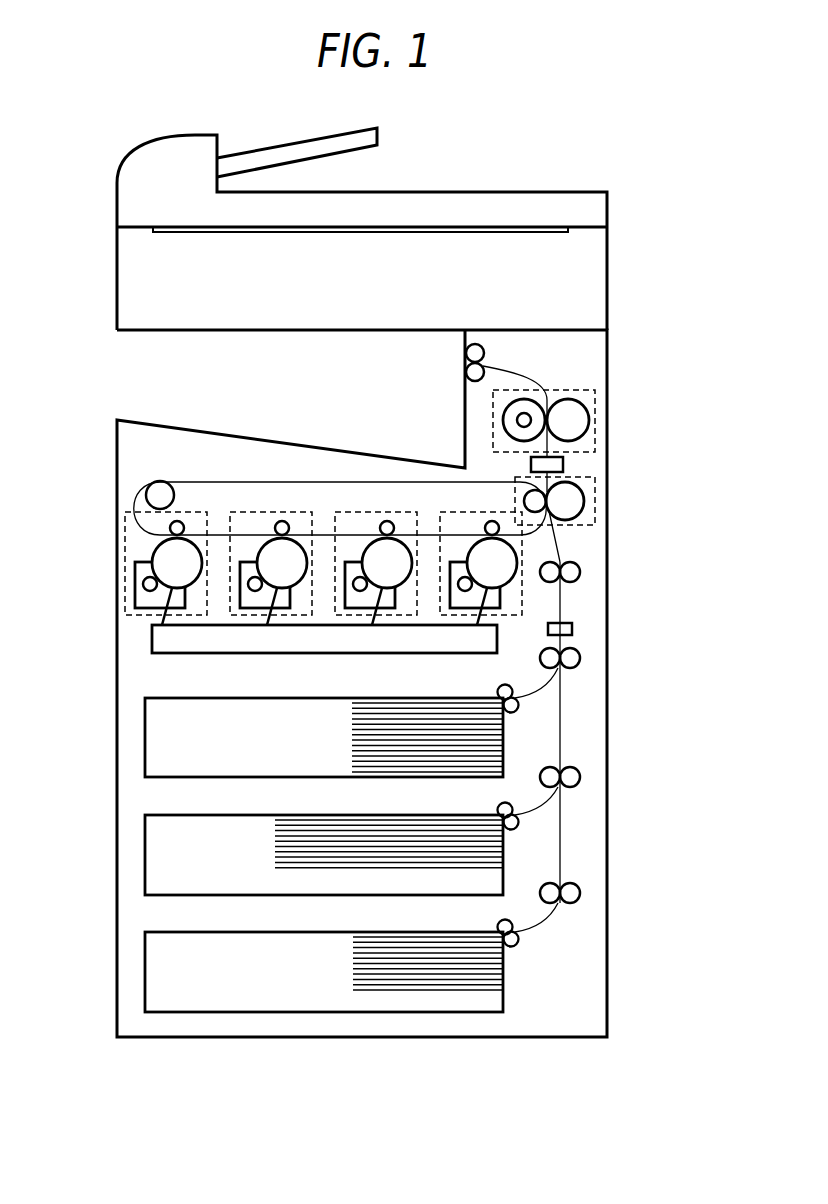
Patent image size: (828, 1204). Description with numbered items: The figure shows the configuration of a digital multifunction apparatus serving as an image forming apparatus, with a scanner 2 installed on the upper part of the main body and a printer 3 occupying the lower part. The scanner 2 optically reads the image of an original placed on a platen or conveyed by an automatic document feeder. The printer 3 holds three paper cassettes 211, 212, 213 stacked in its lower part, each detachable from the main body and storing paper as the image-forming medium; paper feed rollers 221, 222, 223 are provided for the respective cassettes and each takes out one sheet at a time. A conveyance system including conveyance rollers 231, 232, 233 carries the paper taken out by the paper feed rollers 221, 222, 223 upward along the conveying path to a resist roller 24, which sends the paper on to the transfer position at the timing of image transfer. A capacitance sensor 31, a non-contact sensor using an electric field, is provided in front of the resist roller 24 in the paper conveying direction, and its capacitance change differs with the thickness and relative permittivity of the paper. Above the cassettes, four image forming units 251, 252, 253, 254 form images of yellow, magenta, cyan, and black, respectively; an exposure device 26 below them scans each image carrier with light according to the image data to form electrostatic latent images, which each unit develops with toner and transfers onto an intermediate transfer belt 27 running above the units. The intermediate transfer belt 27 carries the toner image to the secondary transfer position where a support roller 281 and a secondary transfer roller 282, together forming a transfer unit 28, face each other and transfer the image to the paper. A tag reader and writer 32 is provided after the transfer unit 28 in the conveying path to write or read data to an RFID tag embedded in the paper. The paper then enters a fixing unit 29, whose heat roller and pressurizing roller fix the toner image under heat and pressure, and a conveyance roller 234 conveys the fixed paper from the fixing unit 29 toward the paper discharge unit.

The scanner 2 is at (616, 245).
The printer 3 is at (616, 363).
The conveyance roller 234 is at (485, 353).
The fixing unit 29 is at (595, 420).
The tag reader and writer 32 is at (563, 465).
The transfer unit 28 is at (572, 495).
The support roller 281 is at (523, 496).
The secondary transfer roller 282 is at (584, 507).
The intermediate transfer belt 27 is at (190, 482).
The image forming unit 251 is at (189, 508).
The image forming unit 252 is at (275, 508).
The image forming unit 253 is at (350, 510).
The image forming unit 254 is at (503, 511).
The exposure device 26 is at (152, 640).
The resist roller 24 is at (580, 572).
The capacitance sensor 31 is at (572, 628).
The conveyance roller 231 is at (580, 658).
The conveyance roller 232 is at (580, 777).
The conveyance roller 233 is at (580, 893).
The paper cassette 211 is at (277, 698).
The paper cassette 212 is at (277, 815).
The paper cassette 213 is at (277, 932).
The paper feed roller 221 is at (498, 688).
The paper feed roller 222 is at (498, 806).
The paper feed roller 223 is at (498, 923).